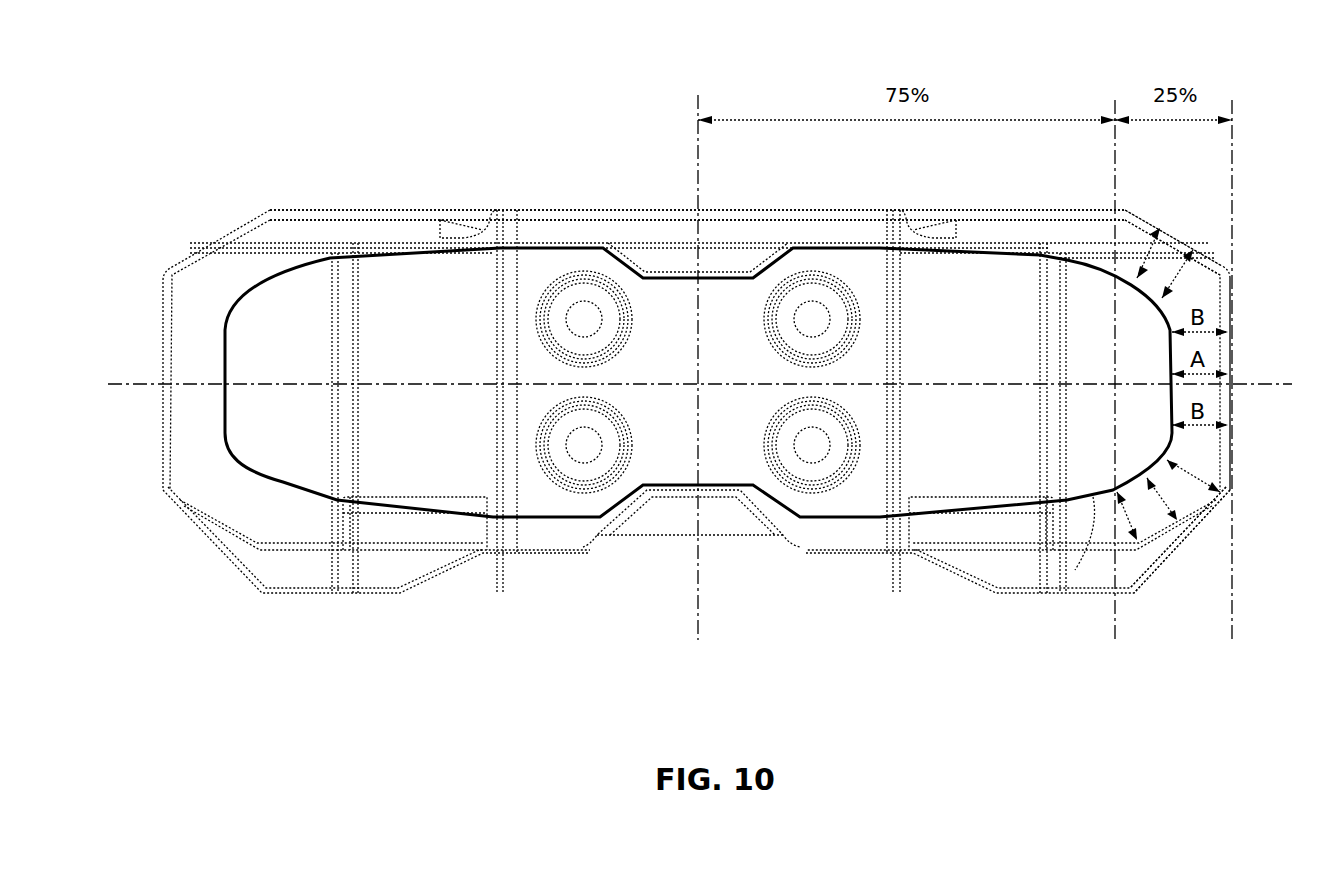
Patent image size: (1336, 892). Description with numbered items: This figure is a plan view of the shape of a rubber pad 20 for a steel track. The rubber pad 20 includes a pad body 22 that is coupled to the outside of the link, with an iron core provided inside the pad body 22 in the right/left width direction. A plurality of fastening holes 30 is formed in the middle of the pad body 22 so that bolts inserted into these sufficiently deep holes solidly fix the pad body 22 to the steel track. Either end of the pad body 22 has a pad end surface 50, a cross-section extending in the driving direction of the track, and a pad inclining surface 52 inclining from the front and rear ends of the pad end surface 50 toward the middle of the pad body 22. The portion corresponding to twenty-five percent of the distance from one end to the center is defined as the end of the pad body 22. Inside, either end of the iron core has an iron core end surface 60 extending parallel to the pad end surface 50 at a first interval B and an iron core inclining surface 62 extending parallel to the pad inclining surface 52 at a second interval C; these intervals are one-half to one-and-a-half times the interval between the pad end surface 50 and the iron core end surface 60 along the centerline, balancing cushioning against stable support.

The rubber pad 20 is at (312, 176).
The pad body 22 is at (424, 208).
The fastening holes 30 is at (583, 290).
The pad end surface 50 is at (1236, 408).
The pad inclining surface 52 is at (1155, 260).
The iron core end surface 60 is at (1175, 340).
The iron core inclining surface 62 is at (1095, 500).